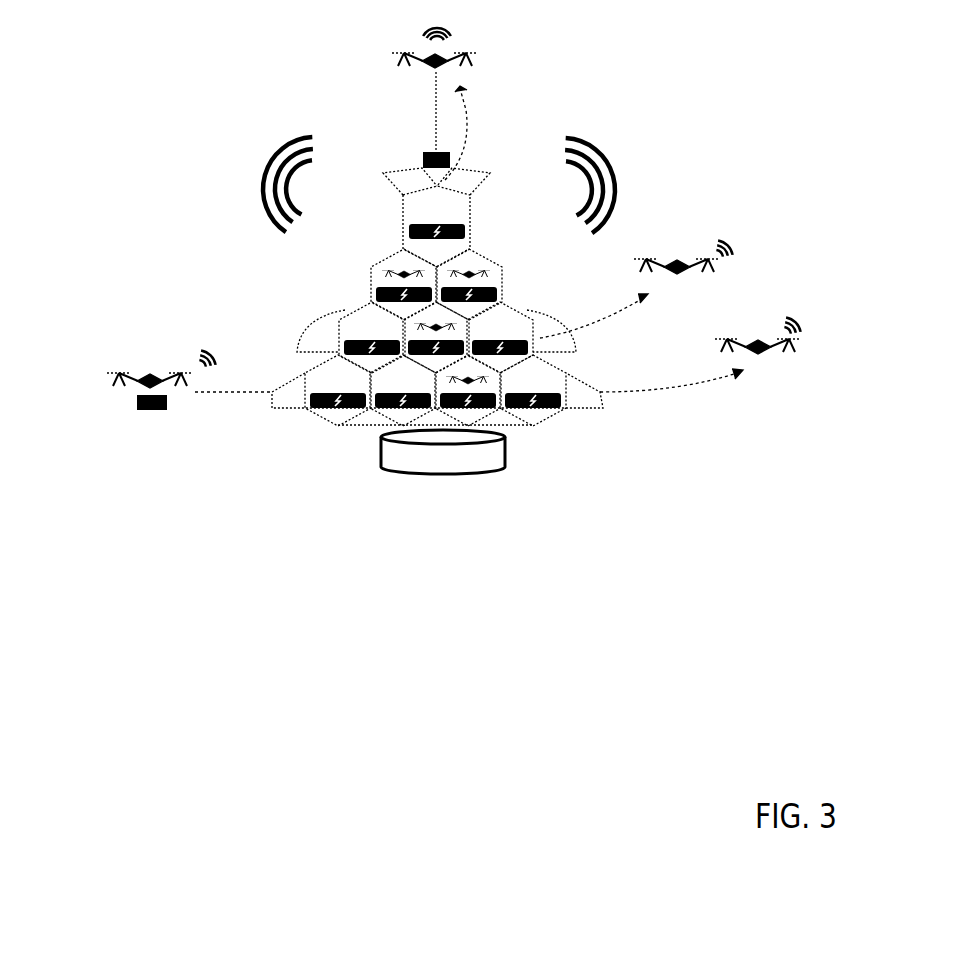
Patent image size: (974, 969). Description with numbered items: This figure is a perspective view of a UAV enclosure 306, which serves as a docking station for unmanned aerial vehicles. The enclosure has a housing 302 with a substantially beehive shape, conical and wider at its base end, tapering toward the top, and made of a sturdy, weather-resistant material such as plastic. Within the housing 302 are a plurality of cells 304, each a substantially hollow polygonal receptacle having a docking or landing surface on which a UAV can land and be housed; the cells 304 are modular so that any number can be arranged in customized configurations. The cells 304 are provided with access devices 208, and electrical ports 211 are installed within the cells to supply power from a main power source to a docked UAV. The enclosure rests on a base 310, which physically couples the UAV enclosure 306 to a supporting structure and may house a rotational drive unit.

The housing 302 is at (286, 278).
The cells 304 is at (505, 317).
The UAV enclosure 306 is at (932, 147).
The access devices 208 is at (280, 415).
The base 310 is at (383, 470).
The electrical ports 211 is at (545, 410).